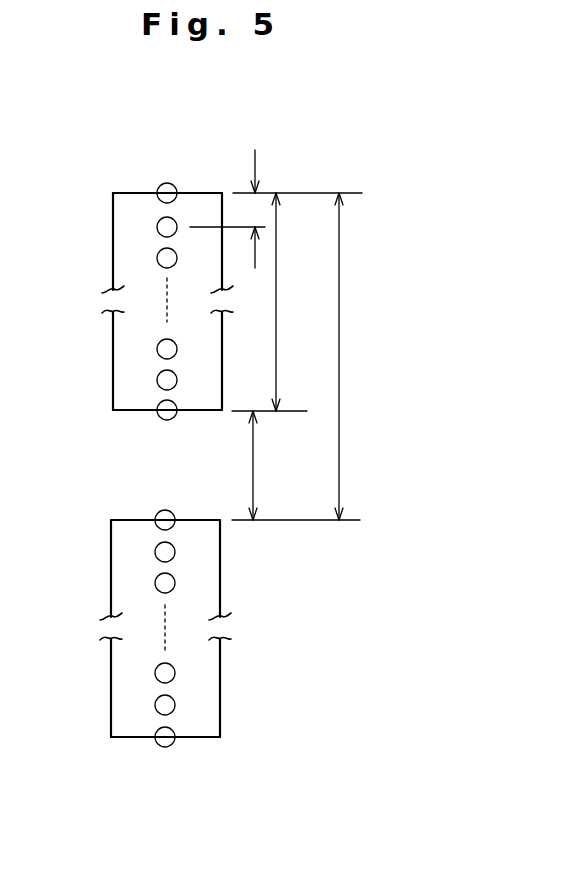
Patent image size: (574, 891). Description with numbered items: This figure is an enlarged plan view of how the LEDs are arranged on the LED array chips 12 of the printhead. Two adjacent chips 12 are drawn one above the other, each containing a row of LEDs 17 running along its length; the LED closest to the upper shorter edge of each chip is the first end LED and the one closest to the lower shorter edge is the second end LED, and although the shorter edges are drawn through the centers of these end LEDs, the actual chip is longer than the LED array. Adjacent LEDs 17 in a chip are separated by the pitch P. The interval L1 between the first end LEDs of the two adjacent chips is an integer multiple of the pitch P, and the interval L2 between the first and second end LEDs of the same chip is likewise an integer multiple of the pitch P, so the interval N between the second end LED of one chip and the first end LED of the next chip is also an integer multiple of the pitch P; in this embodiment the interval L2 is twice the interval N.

The LED array chip 12 is at (132, 222).
The LED 17 is at (165, 188).
The pitch P is at (265, 209).
The interval between first and second end LEDs L2 is at (296, 302).
The interval between adjacent chips' end LEDs N is at (263, 465).
The interval between first end LEDs of adjacent chips L1 is at (360, 356).